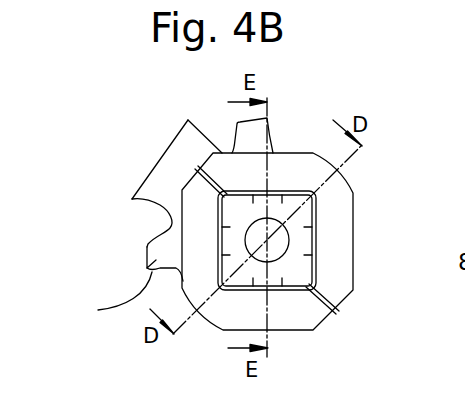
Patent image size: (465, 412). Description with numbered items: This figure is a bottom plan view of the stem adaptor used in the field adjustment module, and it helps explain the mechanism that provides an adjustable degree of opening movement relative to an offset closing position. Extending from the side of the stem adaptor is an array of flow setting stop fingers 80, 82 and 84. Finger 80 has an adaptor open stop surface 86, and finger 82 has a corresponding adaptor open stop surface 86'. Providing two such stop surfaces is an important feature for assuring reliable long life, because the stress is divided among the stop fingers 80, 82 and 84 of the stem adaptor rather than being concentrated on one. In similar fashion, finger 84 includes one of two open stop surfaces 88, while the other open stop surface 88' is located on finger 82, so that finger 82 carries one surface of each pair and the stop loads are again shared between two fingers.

The flow setting stop finger 80 is at (268, 135).
The flow setting stop finger 82 is at (167, 168).
The flow setting stop finger 84 is at (148, 270).
The adaptor open stop surface 86 is at (277, 133).
The adaptor open stop surface 86' is at (189, 115).
The open stop surface 88 is at (122, 295).
The open stop surface 88' is at (128, 223).